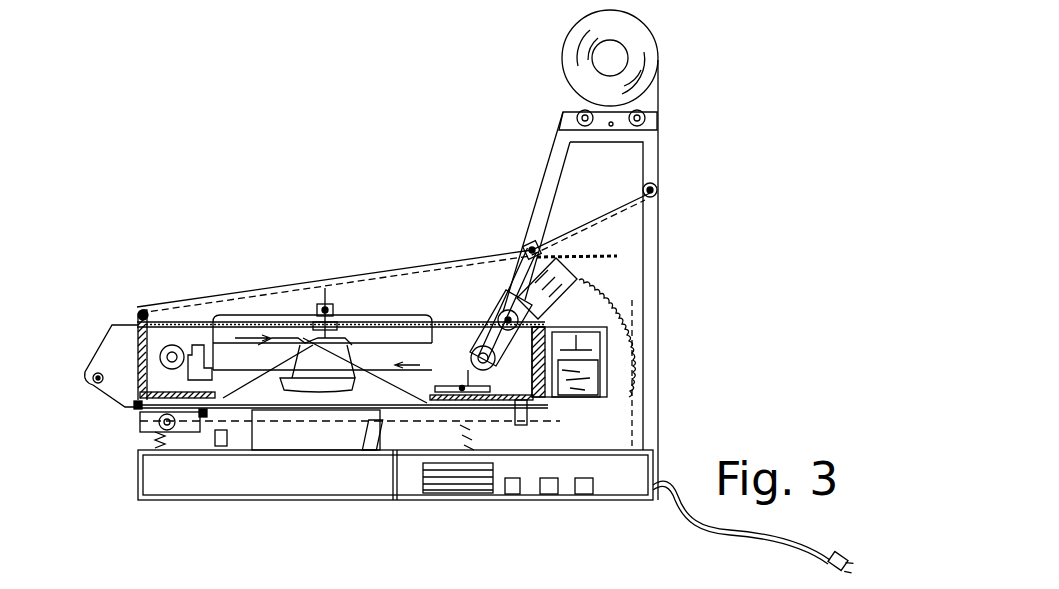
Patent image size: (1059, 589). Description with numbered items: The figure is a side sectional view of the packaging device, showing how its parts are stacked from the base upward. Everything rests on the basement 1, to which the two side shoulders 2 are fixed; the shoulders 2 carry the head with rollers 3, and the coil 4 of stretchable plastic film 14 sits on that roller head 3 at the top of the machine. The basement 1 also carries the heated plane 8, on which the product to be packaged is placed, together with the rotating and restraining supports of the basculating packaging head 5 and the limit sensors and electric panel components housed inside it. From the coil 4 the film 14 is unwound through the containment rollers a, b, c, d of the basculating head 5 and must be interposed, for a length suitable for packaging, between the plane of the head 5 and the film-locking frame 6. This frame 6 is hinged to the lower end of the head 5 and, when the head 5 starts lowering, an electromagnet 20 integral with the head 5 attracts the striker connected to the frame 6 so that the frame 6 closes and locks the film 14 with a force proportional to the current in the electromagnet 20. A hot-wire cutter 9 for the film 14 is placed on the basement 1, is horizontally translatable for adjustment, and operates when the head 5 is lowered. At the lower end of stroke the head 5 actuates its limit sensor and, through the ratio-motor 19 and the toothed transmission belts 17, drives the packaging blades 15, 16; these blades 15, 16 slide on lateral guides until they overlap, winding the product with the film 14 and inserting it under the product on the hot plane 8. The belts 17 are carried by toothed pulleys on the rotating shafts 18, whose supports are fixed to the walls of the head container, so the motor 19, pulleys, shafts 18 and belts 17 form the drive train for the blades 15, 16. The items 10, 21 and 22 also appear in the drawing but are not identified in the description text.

The basement 1 is at (272, 472).
The shoulders 2 is at (648, 222).
The head with rollers 3 is at (613, 118).
The coil 4 is at (575, 52).
The basculating packaging head 5 is at (137, 312).
The film-locking frame 6 is at (203, 415).
The heated plane 8 is at (323, 435).
The hot-wire cutter 9 is at (135, 409).
The bracket 10 is at (98, 383).
The stretchable plastic film 14 is at (413, 268).
The packaging blade 15 is at (462, 390).
The packaging blade 16 is at (157, 387).
The toothed transmission belt 17 is at (285, 340).
The rotating shafts 18 is at (174, 350).
The ratio-motor 19 is at (553, 288).
The electromagnet 20 is at (573, 377).
The pulley bracket 21 is at (325, 300).
The motor 22 is at (462, 475).
The containment roller a is at (653, 188).
The containment roller b is at (530, 247).
The containment roller c is at (143, 314).
The containment roller d is at (138, 409).